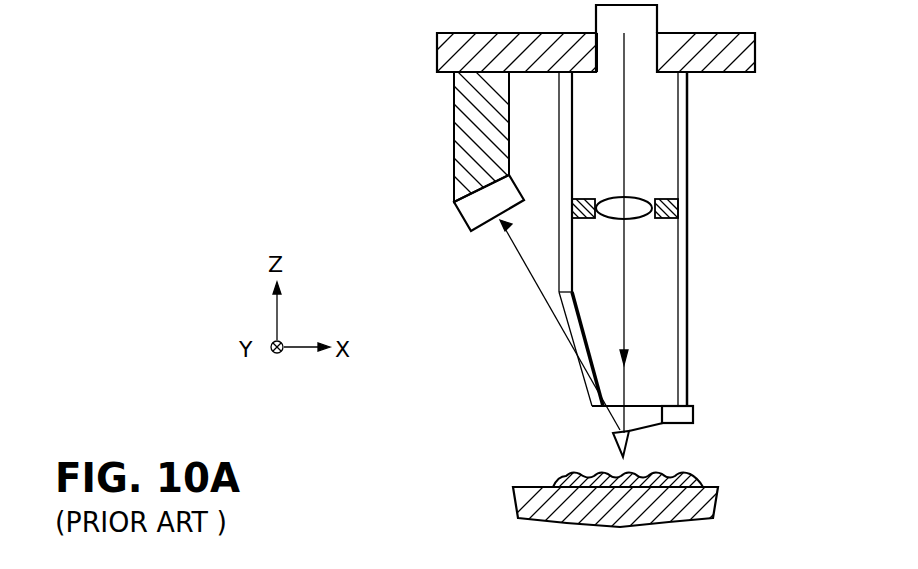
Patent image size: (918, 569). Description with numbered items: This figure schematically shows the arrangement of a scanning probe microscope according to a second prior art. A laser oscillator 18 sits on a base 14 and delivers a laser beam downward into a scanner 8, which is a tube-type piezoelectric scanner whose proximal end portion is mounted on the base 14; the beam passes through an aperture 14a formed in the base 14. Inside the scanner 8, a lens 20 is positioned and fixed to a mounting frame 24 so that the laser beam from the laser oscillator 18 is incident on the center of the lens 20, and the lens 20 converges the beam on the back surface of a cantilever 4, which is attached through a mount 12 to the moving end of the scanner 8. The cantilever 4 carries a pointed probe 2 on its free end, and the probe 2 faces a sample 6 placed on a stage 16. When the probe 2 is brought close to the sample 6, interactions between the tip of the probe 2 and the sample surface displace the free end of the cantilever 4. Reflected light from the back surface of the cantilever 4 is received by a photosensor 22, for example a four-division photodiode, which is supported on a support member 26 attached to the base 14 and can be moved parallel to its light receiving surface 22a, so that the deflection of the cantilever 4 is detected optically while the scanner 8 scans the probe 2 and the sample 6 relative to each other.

The probe 2 is at (613, 435).
The cantilever 4 is at (648, 438).
The sample 6 is at (560, 472).
The scanner 8 is at (688, 291).
The mount 12 is at (693, 410).
The base 14 is at (737, 72).
The aperture 14a is at (642, 71).
The stage 16 is at (713, 485).
The laser oscillator 18 is at (657, 7).
The lens 20 is at (633, 198).
The photosensor 22 is at (457, 223).
The light receiving surface 22a is at (474, 233).
The mounting frame 24 is at (583, 218).
The support member 26 is at (455, 163).